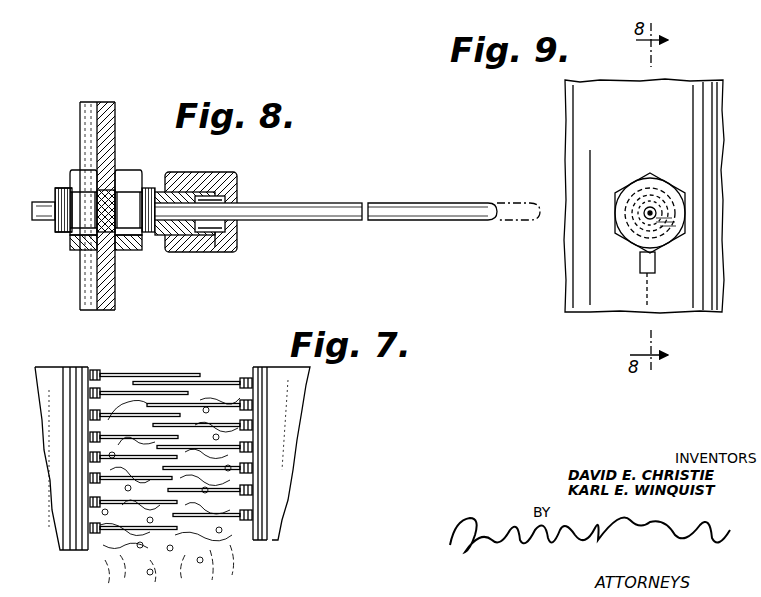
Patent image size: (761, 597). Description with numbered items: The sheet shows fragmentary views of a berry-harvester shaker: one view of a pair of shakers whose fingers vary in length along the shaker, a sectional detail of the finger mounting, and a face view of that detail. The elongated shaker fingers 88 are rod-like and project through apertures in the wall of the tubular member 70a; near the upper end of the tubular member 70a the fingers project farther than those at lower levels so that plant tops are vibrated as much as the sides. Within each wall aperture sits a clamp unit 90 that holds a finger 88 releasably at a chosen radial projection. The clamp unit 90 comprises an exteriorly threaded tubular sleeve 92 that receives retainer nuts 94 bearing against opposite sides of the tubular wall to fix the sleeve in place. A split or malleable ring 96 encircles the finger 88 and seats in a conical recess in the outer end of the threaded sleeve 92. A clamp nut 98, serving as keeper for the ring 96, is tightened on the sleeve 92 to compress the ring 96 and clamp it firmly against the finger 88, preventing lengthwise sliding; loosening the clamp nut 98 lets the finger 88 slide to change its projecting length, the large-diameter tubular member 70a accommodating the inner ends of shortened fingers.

In FIG. 8, the tubular member 70a is at (112, 140).
In FIG. 7, the tubular member 70a is at (70, 367).
In FIG. 8, the shaker finger 88 is at (280, 203).
In FIG. 9, the shaker finger 88 is at (650, 212).
In FIG. 7, the shaker finger 88 is at (165, 400).
In FIG. 8, the clamp unit 90 is at (63, 246).
In FIG. 8, the tubular sleeve 92 is at (55, 232).
In FIG. 8, the retainer nut 94 is at (78, 178).
In FIG. 8, the split ring 96 is at (215, 247).
In FIG. 8, the clamp nut 98 is at (205, 172).